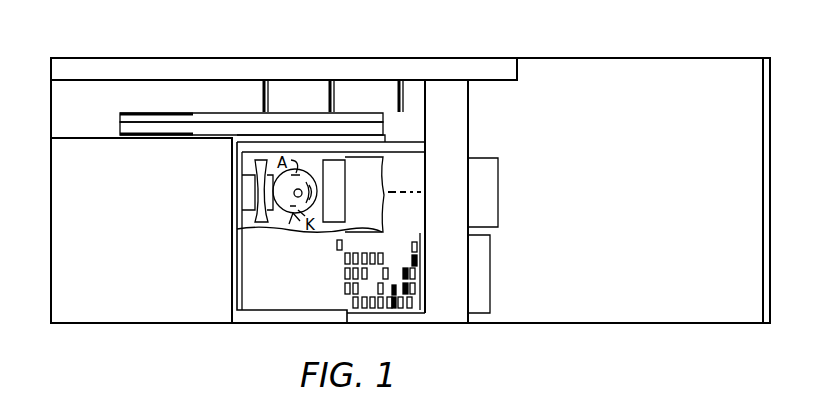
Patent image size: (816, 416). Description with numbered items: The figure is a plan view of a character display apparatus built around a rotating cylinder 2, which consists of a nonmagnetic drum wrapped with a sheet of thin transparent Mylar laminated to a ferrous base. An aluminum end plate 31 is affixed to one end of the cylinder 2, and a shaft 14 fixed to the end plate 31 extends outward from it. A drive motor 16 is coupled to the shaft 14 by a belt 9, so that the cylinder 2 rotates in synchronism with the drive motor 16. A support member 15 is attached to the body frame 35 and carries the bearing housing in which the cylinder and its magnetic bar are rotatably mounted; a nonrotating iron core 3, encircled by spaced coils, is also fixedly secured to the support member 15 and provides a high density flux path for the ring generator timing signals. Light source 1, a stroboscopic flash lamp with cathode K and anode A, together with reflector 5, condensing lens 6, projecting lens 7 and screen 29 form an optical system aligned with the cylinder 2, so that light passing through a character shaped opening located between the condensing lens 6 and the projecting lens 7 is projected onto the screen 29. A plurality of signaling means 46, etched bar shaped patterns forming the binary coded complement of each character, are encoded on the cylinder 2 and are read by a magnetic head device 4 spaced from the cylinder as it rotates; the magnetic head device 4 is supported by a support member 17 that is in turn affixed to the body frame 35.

The light source 1 is at (289, 224).
The rotating cylinder 2 is at (262, 310).
The iron core 3 is at (352, 84).
The magnetic head device 4 is at (480, 311).
The reflector 5 is at (261, 222).
The condensing lens 6 is at (324, 222).
The projecting lens 7 is at (483, 158).
The belt 9 is at (204, 113).
The shaft 14 is at (291, 115).
The support member 15 is at (108, 57).
The drive motor 16 is at (141, 236).
The support member 17 is at (453, 80).
The screen 29 is at (762, 100).
The end plate 31 is at (407, 142).
The body frame 35 is at (590, 58).
The signaling means 46 is at (338, 272).